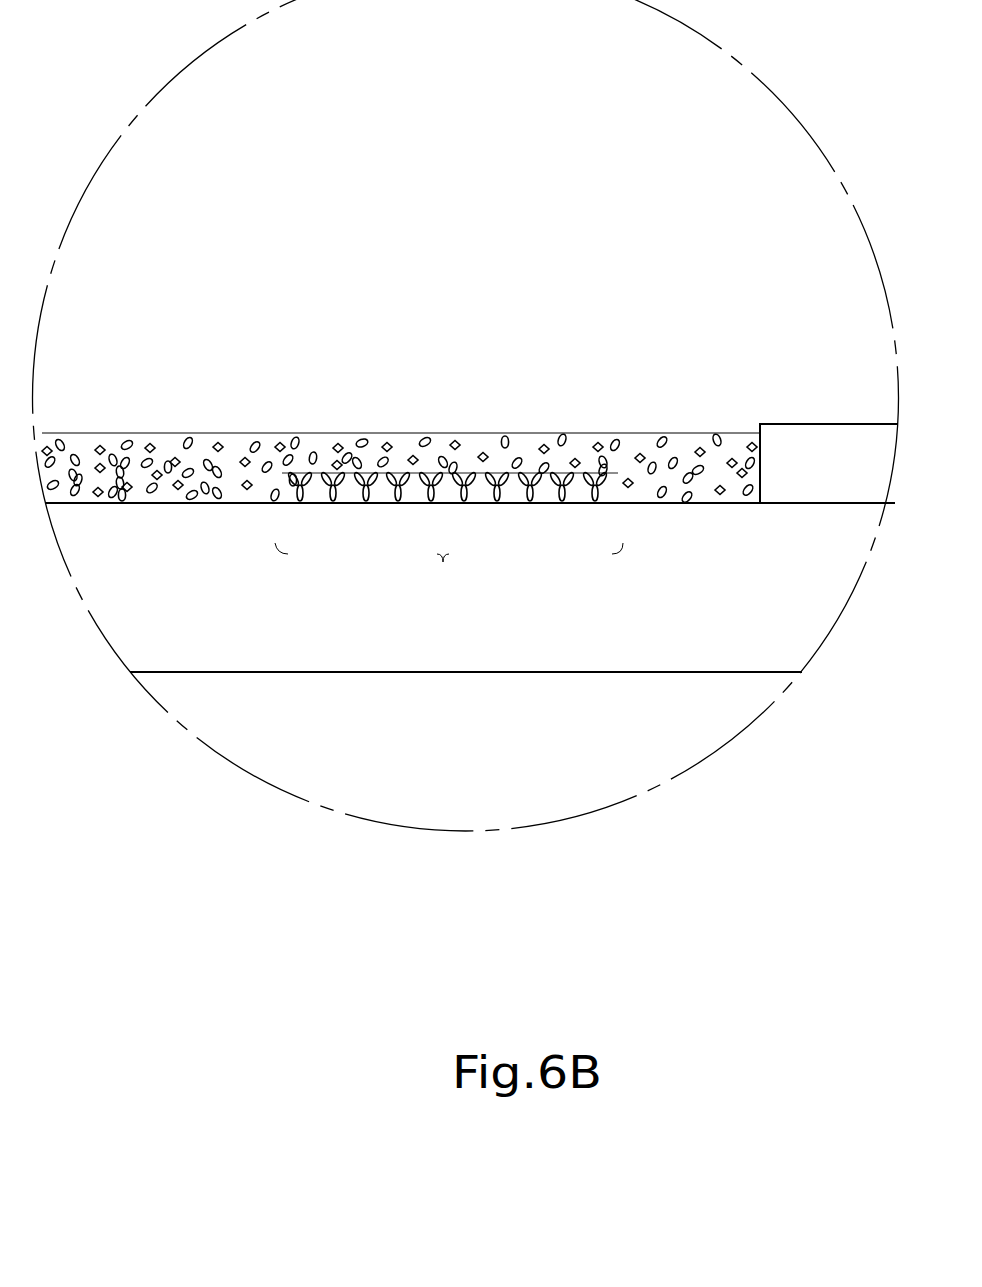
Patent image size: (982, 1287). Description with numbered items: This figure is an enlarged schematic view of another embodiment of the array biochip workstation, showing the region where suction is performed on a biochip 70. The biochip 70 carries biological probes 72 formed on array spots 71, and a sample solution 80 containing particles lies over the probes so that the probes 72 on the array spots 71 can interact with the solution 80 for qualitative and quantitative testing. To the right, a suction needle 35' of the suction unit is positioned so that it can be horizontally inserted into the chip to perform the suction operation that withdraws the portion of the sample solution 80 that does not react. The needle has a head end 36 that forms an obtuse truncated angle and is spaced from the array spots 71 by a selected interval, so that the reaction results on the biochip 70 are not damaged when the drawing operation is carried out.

The sample solution 80 is at (258, 437).
The head end 36 is at (652, 465).
The biological probes 72 is at (285, 475).
The array spots 71 is at (449, 569).
The biochip 70 is at (162, 635).
The suction needle 35' is at (829, 430).